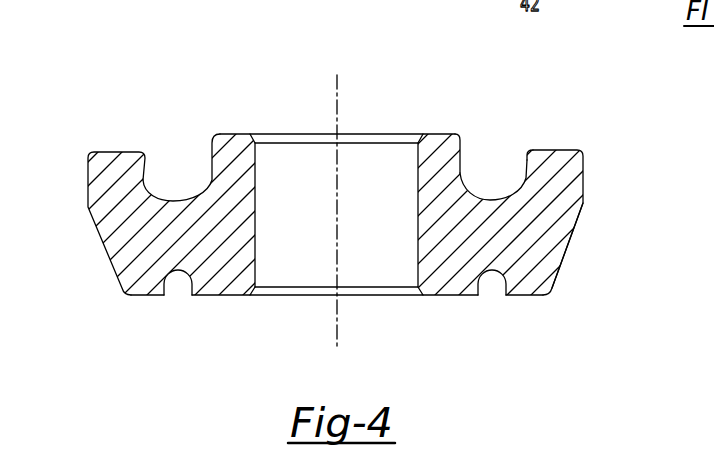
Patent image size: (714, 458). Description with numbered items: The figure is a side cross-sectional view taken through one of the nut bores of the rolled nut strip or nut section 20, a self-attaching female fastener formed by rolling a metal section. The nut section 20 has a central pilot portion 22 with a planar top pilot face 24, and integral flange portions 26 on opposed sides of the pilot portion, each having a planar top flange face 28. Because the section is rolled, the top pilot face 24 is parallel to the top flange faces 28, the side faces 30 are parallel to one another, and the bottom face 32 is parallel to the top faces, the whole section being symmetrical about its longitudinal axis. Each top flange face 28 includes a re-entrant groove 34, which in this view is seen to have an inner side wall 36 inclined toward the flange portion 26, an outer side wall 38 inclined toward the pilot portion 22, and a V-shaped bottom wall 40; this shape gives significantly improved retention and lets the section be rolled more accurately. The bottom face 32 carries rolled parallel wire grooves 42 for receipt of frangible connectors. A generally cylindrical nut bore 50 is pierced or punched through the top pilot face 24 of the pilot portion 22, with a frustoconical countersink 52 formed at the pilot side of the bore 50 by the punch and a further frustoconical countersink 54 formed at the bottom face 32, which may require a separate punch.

The nut section 20 is at (143, 43).
The central pilot portion 22 is at (228, 129).
The top pilot face 24 is at (441, 134).
The flange portion 26 is at (585, 159).
The top flange face 28 is at (110, 152).
The side face 30 is at (580, 238).
The bottom face 32 is at (227, 296).
The re-entrant groove 34 is at (183, 185).
The inner side wall 36 is at (463, 159).
The outer side wall 38 is at (520, 162).
The V-shaped bottom wall 40 is at (472, 193).
The wire groove 42 is at (178, 286).
The nut bore 50 is at (255, 202).
The frustoconical countersink 52 is at (273, 133).
The frustoconical countersink 54 is at (373, 290).